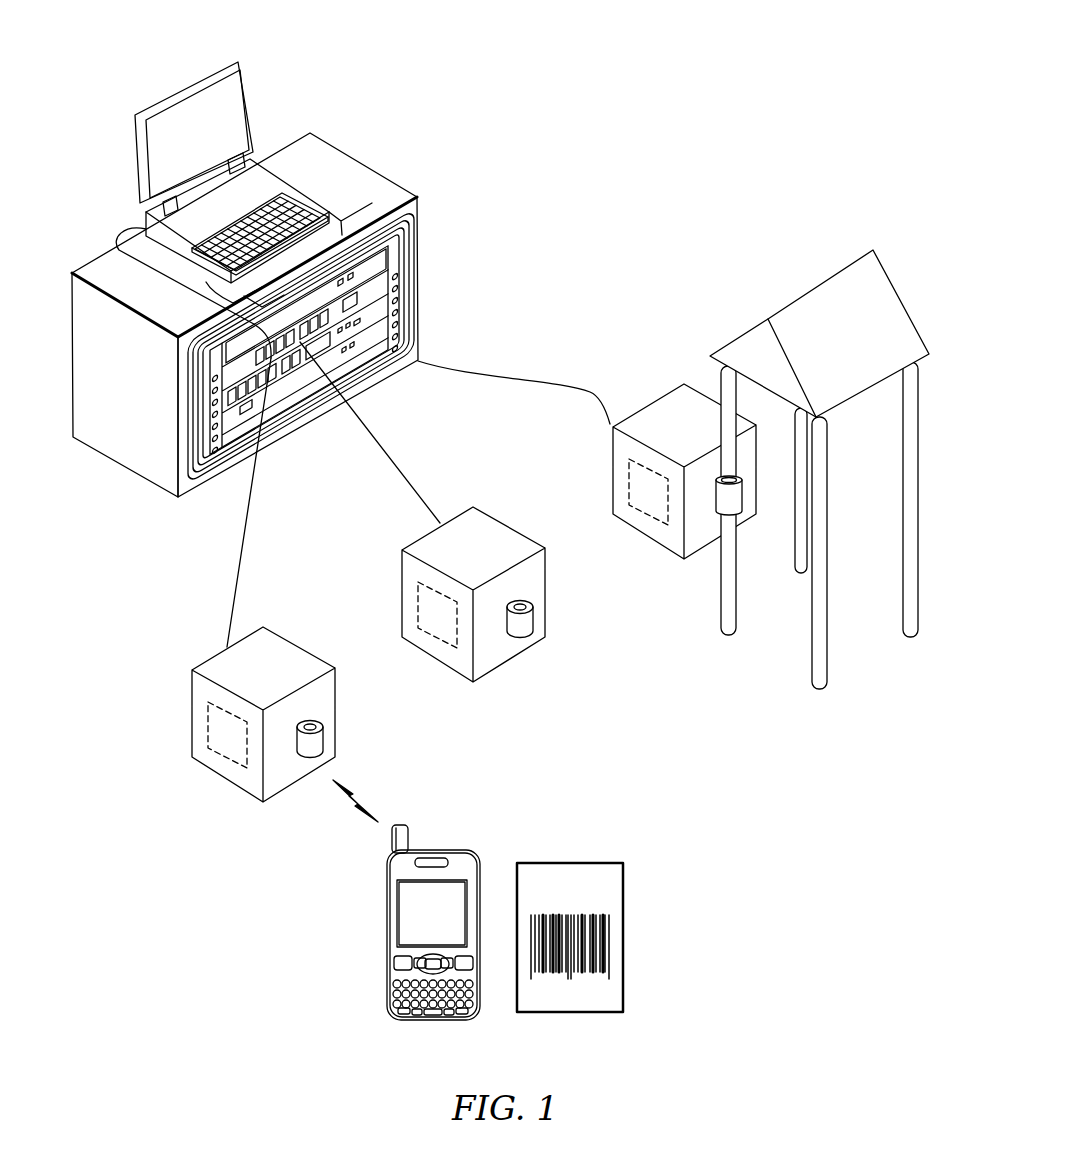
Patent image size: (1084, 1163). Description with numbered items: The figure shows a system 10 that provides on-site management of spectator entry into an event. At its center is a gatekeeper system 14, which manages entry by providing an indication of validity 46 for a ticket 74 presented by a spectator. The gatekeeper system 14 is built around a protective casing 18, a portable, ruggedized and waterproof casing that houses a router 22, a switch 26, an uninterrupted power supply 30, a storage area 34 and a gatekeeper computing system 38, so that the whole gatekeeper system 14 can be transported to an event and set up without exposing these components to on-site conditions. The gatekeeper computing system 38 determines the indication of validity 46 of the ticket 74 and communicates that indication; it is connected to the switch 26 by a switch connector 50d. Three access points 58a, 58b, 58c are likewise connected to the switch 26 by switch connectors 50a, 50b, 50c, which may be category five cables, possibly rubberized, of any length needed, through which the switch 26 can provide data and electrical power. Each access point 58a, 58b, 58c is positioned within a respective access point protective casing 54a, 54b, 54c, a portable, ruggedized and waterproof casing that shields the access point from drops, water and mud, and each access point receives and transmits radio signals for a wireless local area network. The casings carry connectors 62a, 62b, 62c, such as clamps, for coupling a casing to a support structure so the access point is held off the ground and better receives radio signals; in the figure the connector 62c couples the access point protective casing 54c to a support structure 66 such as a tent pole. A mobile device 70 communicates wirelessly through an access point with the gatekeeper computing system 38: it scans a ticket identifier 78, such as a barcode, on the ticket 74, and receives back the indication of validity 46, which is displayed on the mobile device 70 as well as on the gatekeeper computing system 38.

The system 10 is at (656, 58).
The gatekeeper system 14 is at (285, 136).
The protective casing 18 is at (366, 164).
The router 22 is at (403, 286).
The switch 26 is at (403, 314).
The uninterrupted power supply 30 is at (403, 342).
The storage area 34 is at (381, 263).
The gatekeeper computing system 38 is at (163, 102).
The indication of validity 46 is at (212, 97).
The switch connector 50a is at (238, 575).
The switch connector 50b is at (379, 445).
The switch connector 50c is at (529, 383).
The switch connector 50d is at (122, 231).
The access point protective casing 54a is at (217, 668).
The access point protective casing 54b is at (497, 533).
The access point protective casing 54c is at (673, 400).
The access point 58a is at (219, 760).
The access point 58b is at (432, 642).
The access point 58c is at (628, 532).
The connector 62a is at (323, 741).
The connector 62b is at (533, 619).
The connector 62c is at (742, 497).
The support structure 66 is at (836, 292).
The mobile device 70 is at (433, 852).
The ticket 74 is at (626, 902).
The ticket identifier 78 is at (568, 985).